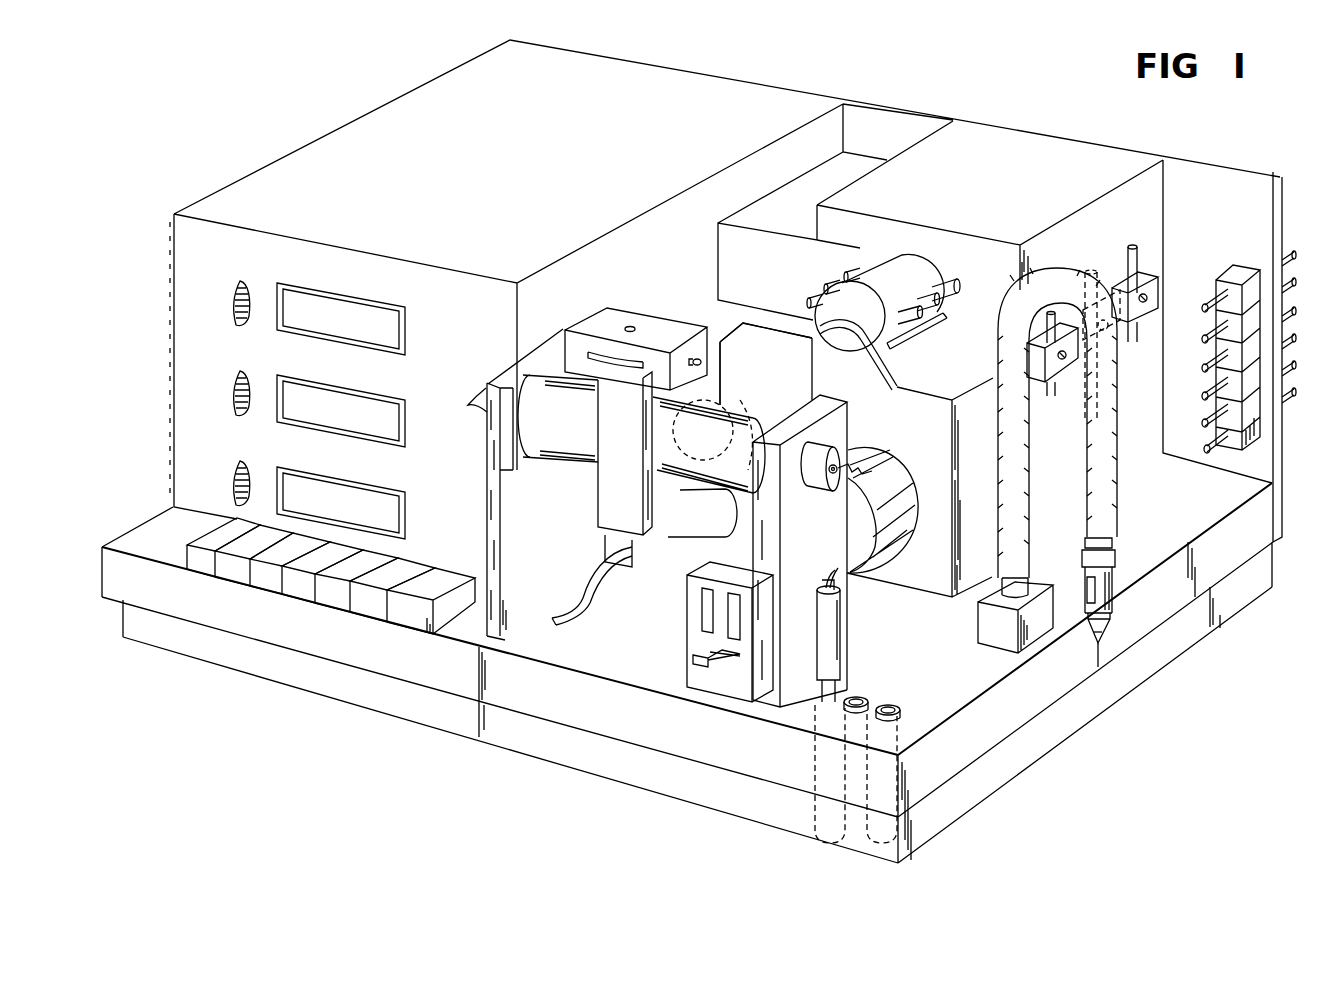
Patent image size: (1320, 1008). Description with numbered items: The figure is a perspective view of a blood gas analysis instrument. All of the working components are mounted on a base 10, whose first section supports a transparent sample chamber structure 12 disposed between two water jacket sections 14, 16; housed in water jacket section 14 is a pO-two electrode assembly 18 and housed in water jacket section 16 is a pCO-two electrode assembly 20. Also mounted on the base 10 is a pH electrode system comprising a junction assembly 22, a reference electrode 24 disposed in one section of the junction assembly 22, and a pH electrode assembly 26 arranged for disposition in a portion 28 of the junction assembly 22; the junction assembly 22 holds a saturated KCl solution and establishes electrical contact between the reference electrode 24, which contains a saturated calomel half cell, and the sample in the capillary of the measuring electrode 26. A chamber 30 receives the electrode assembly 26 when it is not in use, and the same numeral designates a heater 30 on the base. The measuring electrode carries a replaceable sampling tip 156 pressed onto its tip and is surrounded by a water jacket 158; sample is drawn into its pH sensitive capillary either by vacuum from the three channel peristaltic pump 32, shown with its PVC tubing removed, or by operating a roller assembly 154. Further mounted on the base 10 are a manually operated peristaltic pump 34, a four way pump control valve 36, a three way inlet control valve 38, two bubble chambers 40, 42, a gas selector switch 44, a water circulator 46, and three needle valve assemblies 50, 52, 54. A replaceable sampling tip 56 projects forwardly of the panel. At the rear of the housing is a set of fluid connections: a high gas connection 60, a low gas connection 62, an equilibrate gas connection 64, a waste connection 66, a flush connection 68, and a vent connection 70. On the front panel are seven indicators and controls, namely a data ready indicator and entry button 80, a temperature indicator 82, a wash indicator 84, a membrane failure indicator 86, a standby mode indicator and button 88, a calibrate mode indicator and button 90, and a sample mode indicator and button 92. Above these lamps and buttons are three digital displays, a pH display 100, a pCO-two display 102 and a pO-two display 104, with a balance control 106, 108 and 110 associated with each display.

The base 10 is at (1050, 735).
The transparent sample chamber structure 12 is at (603, 517).
The water jacket section 14 is at (567, 463).
The water jacket section 16 is at (663, 466).
The pO2 electrode assembly 18 is at (487, 383).
The pCO2 electrode assembly 20 is at (832, 448).
The junction assembly 22 is at (810, 806).
The reference electrode 24 is at (845, 648).
The pH electrode assembly 26 is at (1113, 628).
The portion of junction assembly 28 is at (864, 698).
The chamber 30 is at (727, 343).
The three channel peristaltic pump 32 is at (918, 255).
The manually operated peristaltic pump 34 is at (599, 312).
The four way pump control valve 36 is at (688, 522).
The three way inlet control valve 38 is at (726, 458).
The bubble chamber 40 is at (700, 602).
The bubble chamber 42 is at (728, 620).
The gas selector switch 44 is at (693, 656).
The water circulator 46 is at (895, 480).
The needle valve assembly 50 is at (1040, 398).
The needle valve assembly 52 is at (1113, 412).
The needle valve assembly 54 is at (1138, 338).
The replaceable sampling tip 56 is at (584, 602).
The high gas connection 60 is at (1218, 277).
The low gas connection 62 is at (1207, 318).
The equilibrate gas connection 64 is at (1207, 358).
The waste connection 66 is at (1207, 380).
The flush connection 68 is at (1207, 405).
The vent connection 70 is at (1210, 432).
The data ready indicator and entry button 80 is at (218, 531).
The temperature indicator 82 is at (230, 572).
The wash indicator 84 is at (260, 586).
The membrane failure indicator 86 is at (300, 598).
The standby mode indicator and button 88 is at (336, 610).
The calibrate mode indicator and button 90 is at (368, 612).
The sample mode indicator and button 92 is at (413, 617).
The pH display 100 is at (398, 328).
The pCO2 display 102 is at (398, 412).
The pO2 display 104 is at (398, 502).
The balance control 106 is at (236, 297).
The balance control 108 is at (236, 388).
The balance control 110 is at (236, 477).
The roller assembly 154 is at (1085, 590).
The replaceable sampling tip 156 is at (1097, 662).
The water jacket 158 is at (1083, 567).